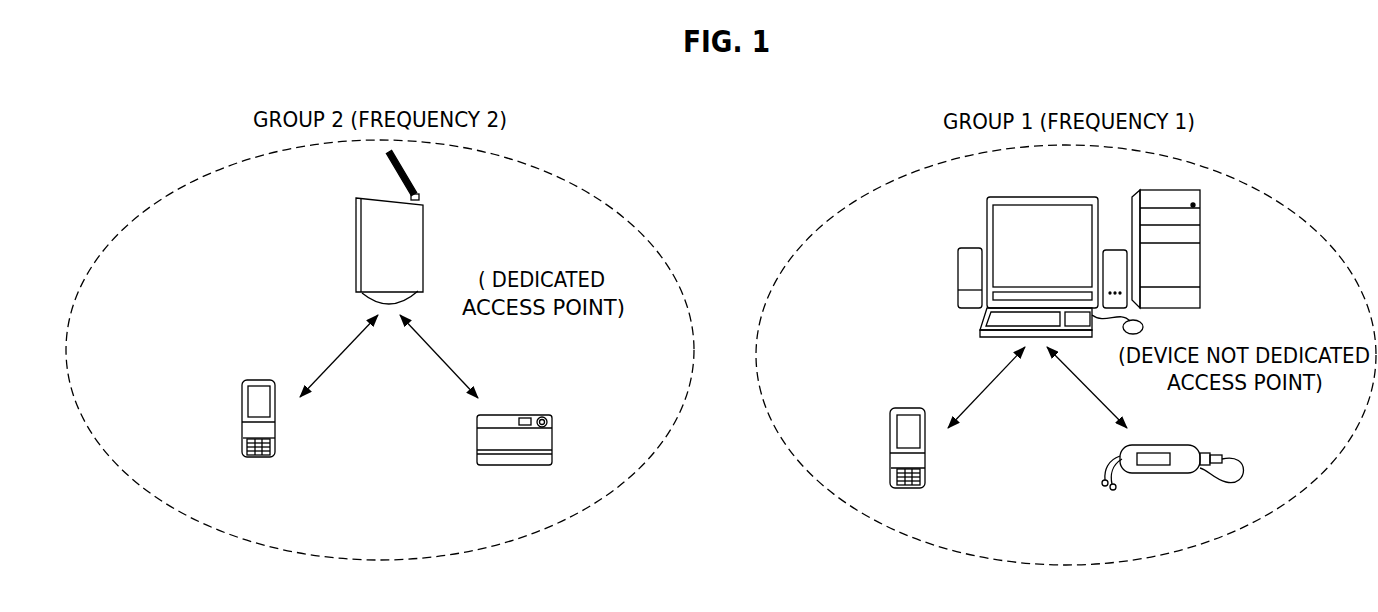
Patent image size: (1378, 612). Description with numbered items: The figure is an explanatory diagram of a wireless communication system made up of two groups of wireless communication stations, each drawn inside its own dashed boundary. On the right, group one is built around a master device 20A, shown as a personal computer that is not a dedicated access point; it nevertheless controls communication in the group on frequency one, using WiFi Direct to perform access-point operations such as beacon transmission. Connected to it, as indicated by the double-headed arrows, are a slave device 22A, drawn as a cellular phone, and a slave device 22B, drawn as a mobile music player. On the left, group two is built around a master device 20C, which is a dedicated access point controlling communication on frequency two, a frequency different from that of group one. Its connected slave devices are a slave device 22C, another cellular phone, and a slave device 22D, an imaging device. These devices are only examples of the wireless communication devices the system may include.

The master device 20C is at (423, 245).
The slave device 22C is at (258, 457).
The slave device 22D is at (517, 465).
The master device 20A is at (1200, 252).
The slave device 22A is at (925, 470).
The slave device 22B is at (1165, 473).